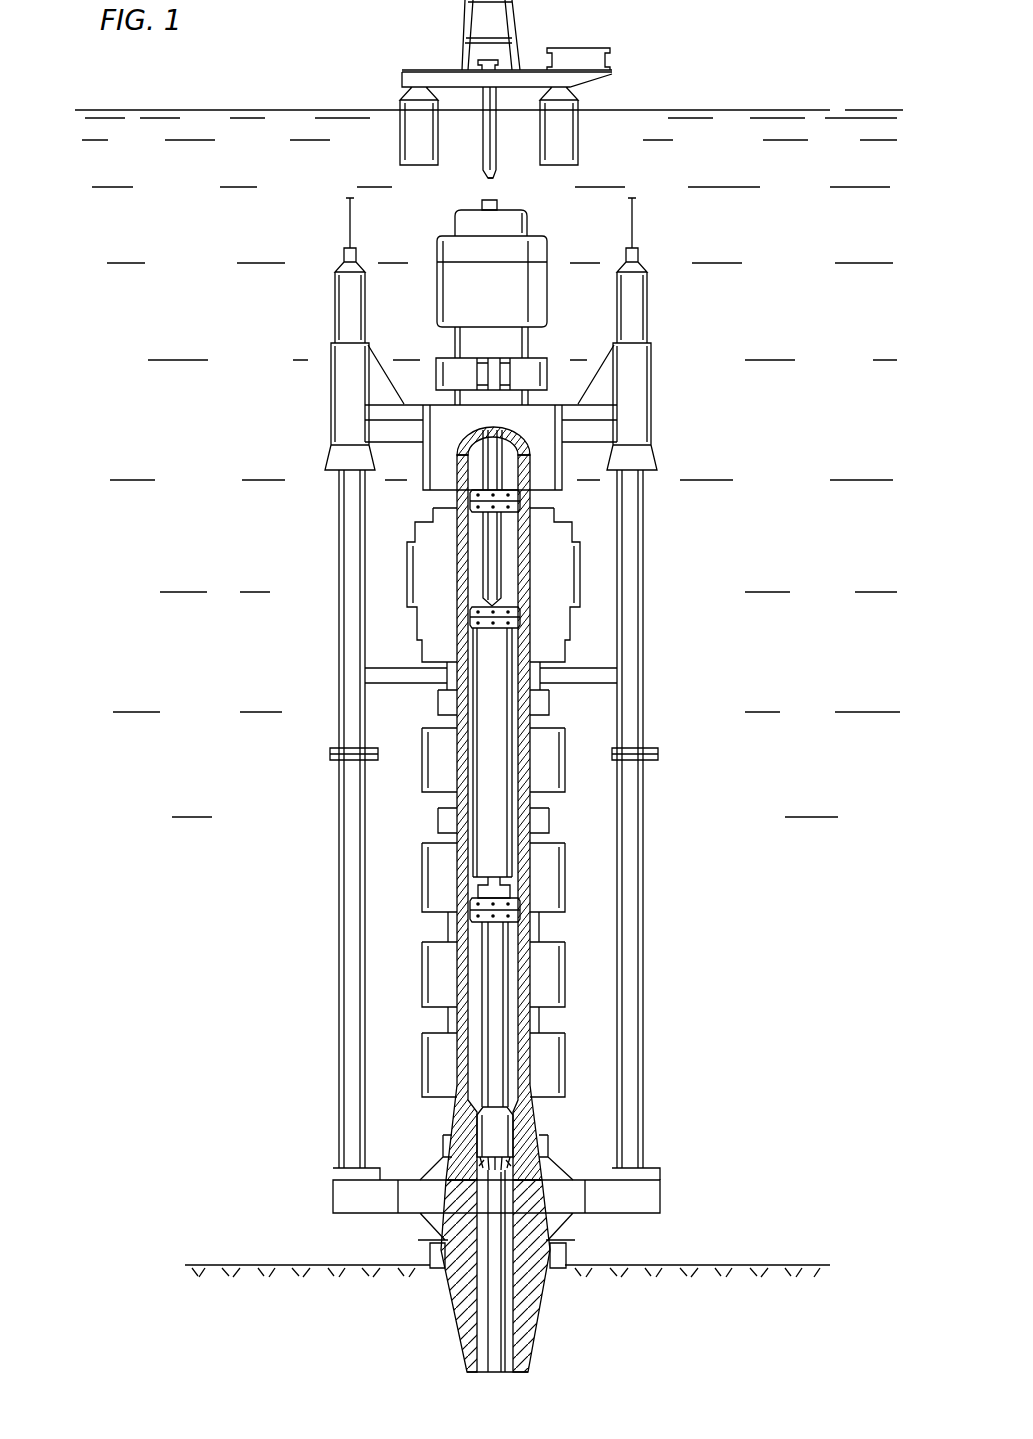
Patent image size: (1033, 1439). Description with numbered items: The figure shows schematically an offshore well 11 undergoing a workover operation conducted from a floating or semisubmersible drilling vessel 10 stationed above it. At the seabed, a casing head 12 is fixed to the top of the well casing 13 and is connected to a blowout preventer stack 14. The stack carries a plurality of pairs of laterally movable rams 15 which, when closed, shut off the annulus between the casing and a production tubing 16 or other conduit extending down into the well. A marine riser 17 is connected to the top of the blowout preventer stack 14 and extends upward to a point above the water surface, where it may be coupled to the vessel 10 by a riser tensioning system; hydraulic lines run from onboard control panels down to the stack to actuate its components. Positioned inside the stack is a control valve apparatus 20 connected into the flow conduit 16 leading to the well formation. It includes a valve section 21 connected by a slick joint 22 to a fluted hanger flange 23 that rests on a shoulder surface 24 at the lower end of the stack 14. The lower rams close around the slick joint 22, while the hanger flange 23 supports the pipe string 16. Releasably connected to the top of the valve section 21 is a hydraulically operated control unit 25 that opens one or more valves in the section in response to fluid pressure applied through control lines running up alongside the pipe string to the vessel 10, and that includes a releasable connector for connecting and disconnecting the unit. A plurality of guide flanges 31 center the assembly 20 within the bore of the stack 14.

The floating or semisubmersible drilling vessel 10 is at (407, 82).
The offshore well 11 is at (531, 1355).
The casing head 12 is at (572, 1220).
The well casing 13 is at (467, 1305).
The blowout preventer stack 14 is at (654, 384).
The laterally movable rams 15 is at (530, 762).
The production tubing 16 is at (494, 176).
The marine riser 17 is at (483, 143).
The control valve apparatus 20 is at (466, 802).
The valve section 21 is at (512, 890).
The slick joint 22 is at (490, 1008).
The fluted hanger flange 23 is at (487, 1132).
The shoulder surface 24 is at (545, 1168).
The hydraulically operated control unit 25 is at (497, 735).
The guide flanges 31 is at (523, 499).